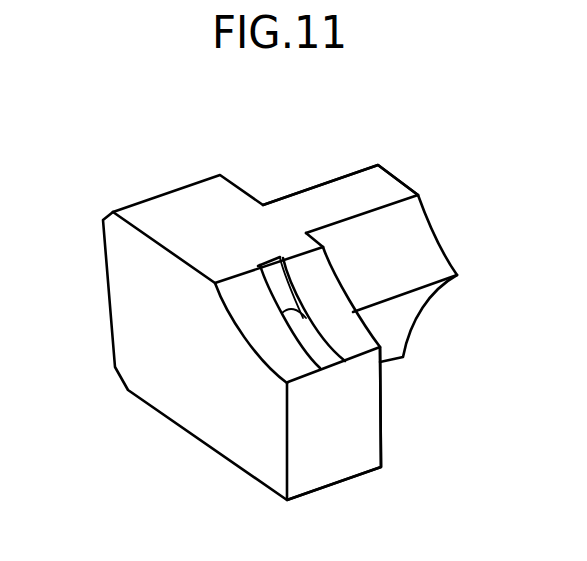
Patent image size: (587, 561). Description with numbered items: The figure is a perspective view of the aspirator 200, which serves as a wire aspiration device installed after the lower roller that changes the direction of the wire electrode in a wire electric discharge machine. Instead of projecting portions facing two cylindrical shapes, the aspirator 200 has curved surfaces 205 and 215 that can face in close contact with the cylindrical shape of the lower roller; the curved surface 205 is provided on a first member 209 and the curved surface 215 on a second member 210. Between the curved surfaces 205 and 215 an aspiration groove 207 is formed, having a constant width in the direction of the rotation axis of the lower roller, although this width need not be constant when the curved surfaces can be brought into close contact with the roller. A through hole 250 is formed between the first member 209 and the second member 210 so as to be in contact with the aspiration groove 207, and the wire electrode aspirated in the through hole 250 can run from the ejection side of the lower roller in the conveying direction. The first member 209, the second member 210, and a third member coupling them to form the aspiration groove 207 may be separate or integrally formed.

The aspirator 200 is at (160, 213).
The curved surface 205 is at (318, 288).
The aspiration groove 207 is at (271, 277).
The first member 209 is at (375, 336).
The second member 210 is at (272, 383).
The curved surface 215 is at (263, 333).
The through hole 250 is at (308, 340).